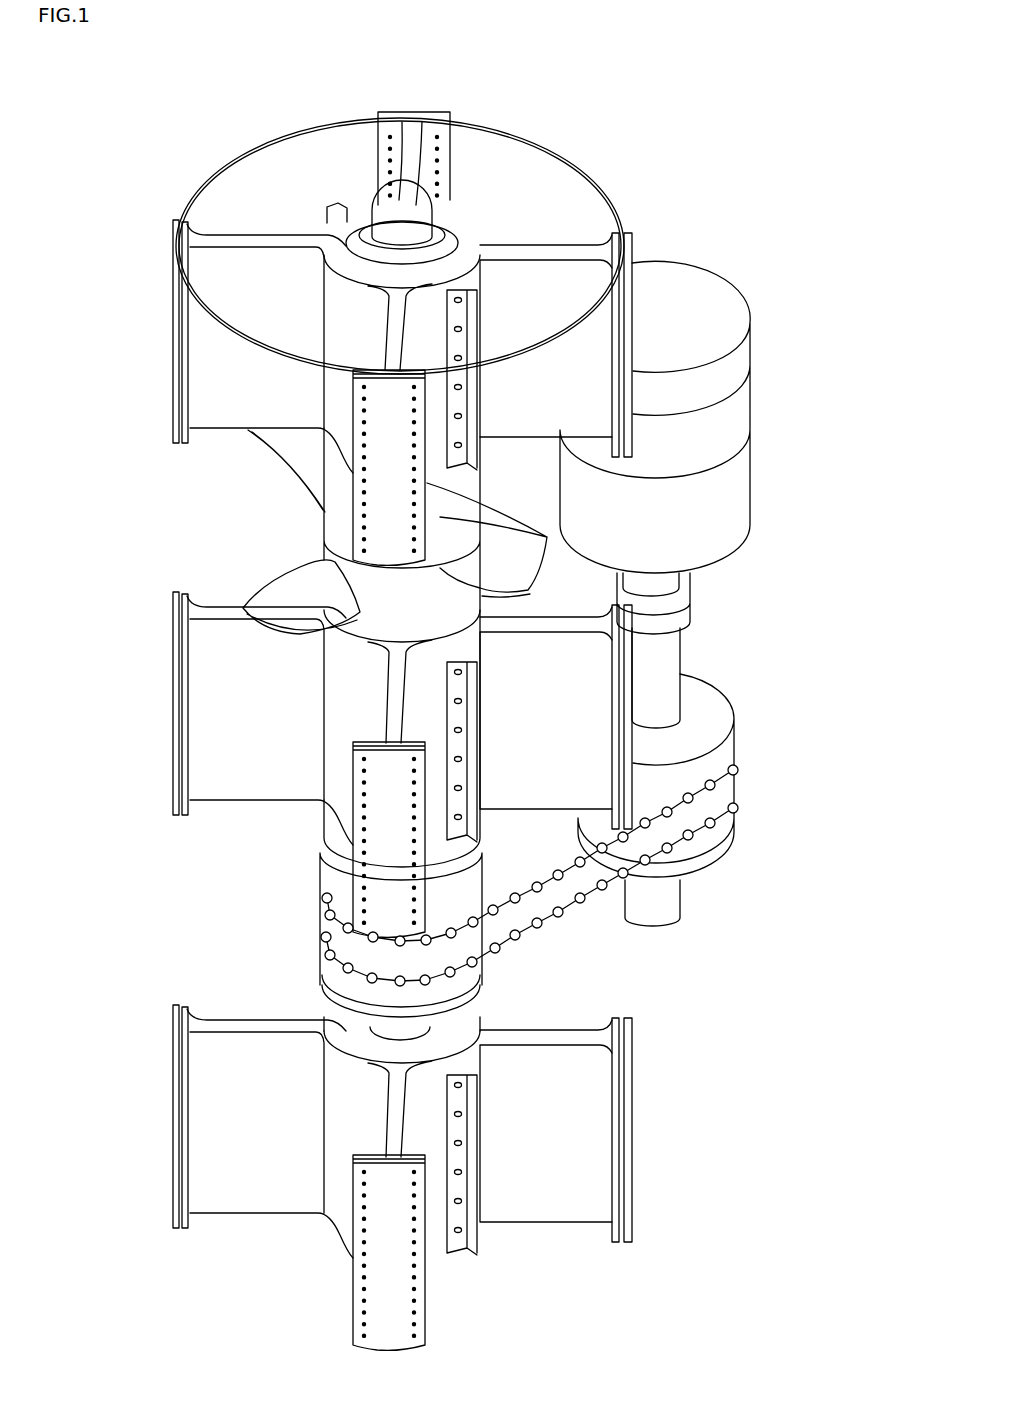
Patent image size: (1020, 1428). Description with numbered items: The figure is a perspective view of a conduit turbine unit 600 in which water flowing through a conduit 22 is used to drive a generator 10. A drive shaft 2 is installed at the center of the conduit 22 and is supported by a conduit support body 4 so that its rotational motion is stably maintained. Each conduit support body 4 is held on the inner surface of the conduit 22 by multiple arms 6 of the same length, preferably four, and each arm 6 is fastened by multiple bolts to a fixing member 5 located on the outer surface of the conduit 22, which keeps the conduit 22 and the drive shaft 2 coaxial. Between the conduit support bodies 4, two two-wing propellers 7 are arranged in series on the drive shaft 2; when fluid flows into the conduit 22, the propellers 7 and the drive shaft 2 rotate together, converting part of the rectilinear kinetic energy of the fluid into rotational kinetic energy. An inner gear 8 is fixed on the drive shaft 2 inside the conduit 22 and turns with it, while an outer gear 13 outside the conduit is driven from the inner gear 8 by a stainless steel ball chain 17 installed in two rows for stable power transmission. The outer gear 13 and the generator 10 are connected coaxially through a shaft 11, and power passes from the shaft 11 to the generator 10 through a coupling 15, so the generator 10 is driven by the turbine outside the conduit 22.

The conduit turbine unit 600 is at (140, 230).
The drive shaft 2 is at (413, 205).
The conduit support body 4 is at (328, 225).
The fixing member 5 is at (172, 278).
The arm 6 is at (263, 250).
The propeller 7 is at (305, 585).
The inner gear 8 is at (337, 970).
The generator 10 is at (715, 293).
The shaft 11 is at (668, 658).
The outer gear 13 is at (722, 720).
The coupling 15 is at (682, 602).
The ball chain 17 is at (740, 771).
The conduit 22 is at (560, 152).